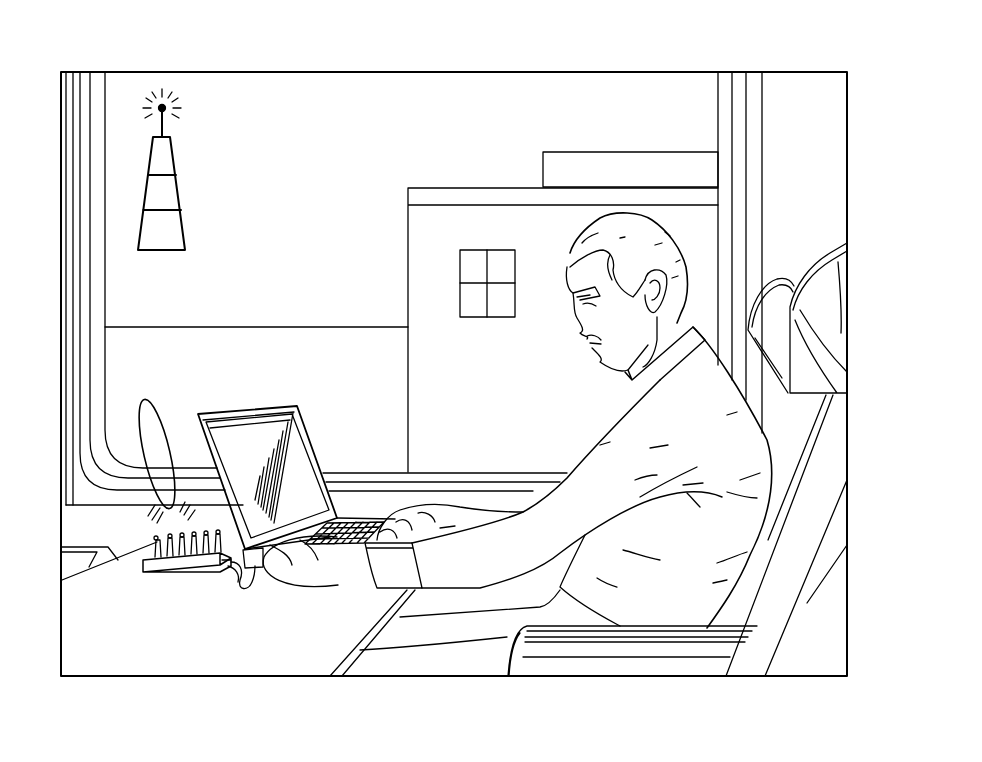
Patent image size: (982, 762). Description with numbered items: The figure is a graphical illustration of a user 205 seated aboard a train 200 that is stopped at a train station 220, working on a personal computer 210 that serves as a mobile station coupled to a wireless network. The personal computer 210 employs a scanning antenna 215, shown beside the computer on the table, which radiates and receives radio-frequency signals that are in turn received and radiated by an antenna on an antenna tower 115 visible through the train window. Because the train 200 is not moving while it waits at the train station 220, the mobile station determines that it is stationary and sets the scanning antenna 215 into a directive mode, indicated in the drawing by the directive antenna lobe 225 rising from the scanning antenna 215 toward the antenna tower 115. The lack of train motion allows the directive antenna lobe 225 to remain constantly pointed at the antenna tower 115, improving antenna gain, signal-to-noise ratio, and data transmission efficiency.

The train 200 is at (125, 40).
The antenna tower 115 is at (177, 171).
The train station 220 is at (467, 187).
The user 205 is at (592, 447).
The personal computer 210 is at (360, 521).
The scanning antenna 215 is at (153, 544).
The directive antenna lobe 225 is at (165, 420).